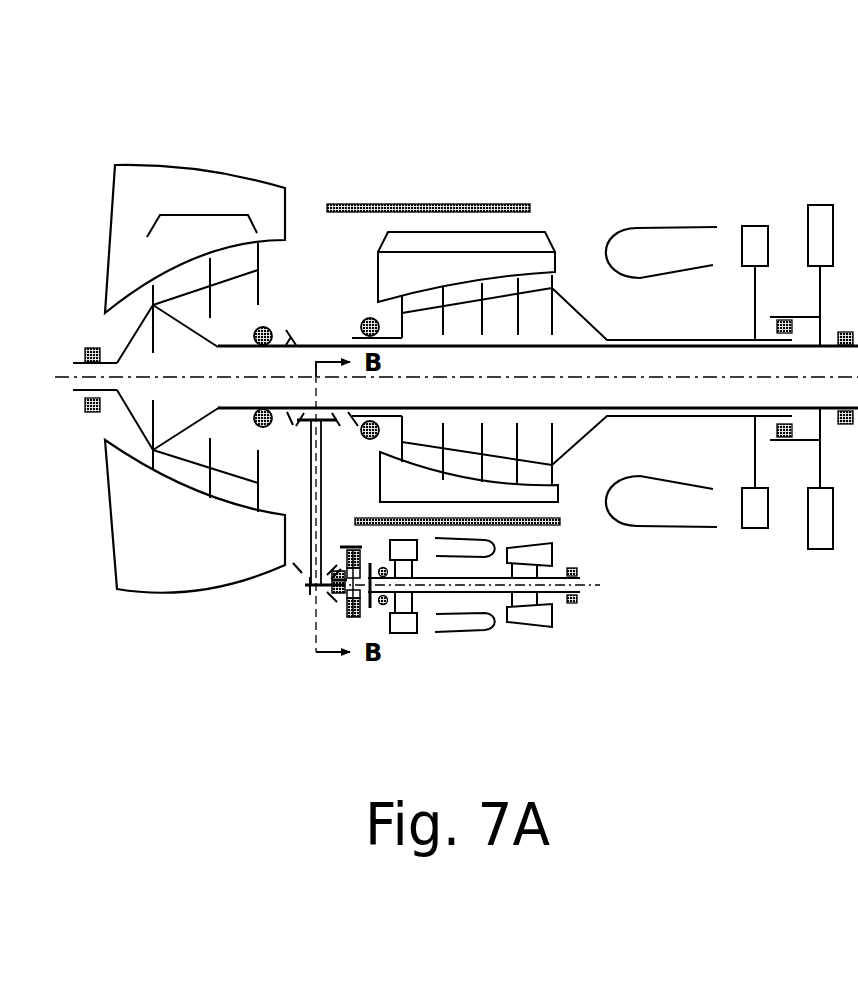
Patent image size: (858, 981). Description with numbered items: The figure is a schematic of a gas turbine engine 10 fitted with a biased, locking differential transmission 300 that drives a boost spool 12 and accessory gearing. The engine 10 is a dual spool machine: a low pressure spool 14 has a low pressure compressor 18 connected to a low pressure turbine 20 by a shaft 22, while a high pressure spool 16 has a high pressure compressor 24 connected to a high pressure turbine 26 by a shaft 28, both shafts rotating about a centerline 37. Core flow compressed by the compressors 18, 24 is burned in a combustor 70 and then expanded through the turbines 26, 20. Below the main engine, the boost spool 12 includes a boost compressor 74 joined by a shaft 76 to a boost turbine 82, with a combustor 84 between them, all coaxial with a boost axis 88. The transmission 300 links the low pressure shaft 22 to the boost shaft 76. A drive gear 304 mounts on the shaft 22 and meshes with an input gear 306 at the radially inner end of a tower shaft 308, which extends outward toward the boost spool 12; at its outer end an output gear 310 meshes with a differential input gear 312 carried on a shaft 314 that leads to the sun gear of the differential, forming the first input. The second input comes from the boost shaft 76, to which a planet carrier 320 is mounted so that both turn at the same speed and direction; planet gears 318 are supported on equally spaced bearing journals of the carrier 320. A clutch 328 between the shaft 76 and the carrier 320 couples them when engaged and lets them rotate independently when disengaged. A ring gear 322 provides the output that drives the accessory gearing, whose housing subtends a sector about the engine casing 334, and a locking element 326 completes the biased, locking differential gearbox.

The gas turbine engine 10 is at (92, 138).
The boost spool 12 is at (525, 653).
The low pressure spool 14 is at (88, 298).
The high pressure spool 16 is at (699, 328).
The low pressure compressor 18 is at (195, 215).
The low pressure turbine 20 is at (822, 203).
The shaft 22 is at (657, 348).
The high pressure compressor 24 is at (470, 232).
The high pressure turbine 26 is at (752, 224).
The shaft 28 is at (630, 338).
The centerline 37 is at (60, 372).
The combustor 70 is at (668, 222).
The boost compressor 74 is at (555, 622).
The shaft 76 is at (497, 597).
The boost turbine 82 is at (412, 633).
The combustor 84 is at (468, 632).
The boost axis 88 is at (592, 588).
The transmission 300 is at (290, 611).
The drive gear 304 is at (290, 425).
The input gear 306 is at (338, 428).
The tower shaft 308 is at (322, 492).
The output gear 310 is at (295, 568).
The differential input gear 312 is at (332, 597).
The shaft 314 is at (342, 603).
The planet gears 318 is at (357, 558).
The planet carrier 320 is at (362, 612).
The ring gear 322 is at (353, 613).
The locking element 326 is at (347, 546).
The clutch 328 is at (371, 607).
The casing 334 is at (560, 521).